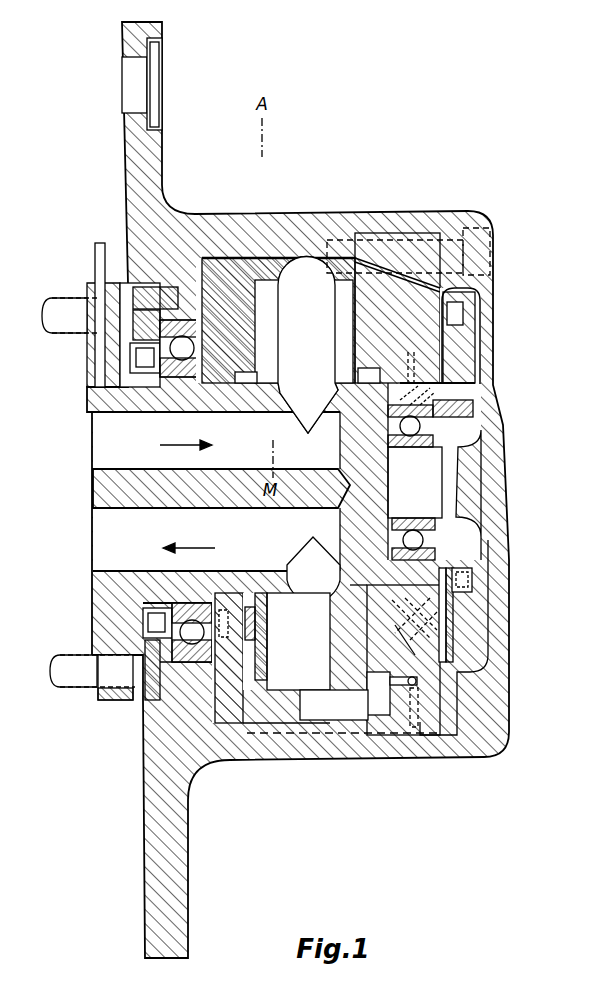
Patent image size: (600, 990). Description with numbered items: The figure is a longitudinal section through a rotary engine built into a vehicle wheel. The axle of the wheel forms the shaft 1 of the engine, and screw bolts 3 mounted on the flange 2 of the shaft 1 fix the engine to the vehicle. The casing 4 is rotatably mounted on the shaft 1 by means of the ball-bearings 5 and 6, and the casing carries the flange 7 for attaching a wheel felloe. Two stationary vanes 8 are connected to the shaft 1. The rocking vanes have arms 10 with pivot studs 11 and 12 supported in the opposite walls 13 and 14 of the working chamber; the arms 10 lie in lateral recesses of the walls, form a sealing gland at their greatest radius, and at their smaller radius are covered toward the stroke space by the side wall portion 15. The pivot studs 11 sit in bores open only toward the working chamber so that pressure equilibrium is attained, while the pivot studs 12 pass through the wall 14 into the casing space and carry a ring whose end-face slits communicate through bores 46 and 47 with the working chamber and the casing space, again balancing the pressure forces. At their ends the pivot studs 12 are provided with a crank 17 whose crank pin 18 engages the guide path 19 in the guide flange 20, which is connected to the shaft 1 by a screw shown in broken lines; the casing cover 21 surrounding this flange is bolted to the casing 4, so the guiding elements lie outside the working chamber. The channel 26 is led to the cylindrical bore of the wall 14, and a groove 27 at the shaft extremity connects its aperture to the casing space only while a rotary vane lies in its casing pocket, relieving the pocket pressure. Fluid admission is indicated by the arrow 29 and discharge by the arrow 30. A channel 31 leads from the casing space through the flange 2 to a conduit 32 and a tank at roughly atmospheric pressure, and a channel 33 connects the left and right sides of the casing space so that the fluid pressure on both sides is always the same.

The shaft 1 is at (125, 590).
The flange 2 is at (118, 695).
The screw bolts 3 is at (90, 673).
The casing 4 is at (297, 238).
The ball-bearing 5 is at (190, 663).
The ball-bearing 6 is at (432, 540).
The flange 7 is at (137, 150).
The stationary vane 8 is at (335, 293).
The arms 10 is at (370, 625).
The pivot stud 11 is at (240, 617).
The pivot stud 12 is at (370, 618).
The wall 13 is at (240, 640).
The wall 14 is at (400, 647).
The side wall portion 15 is at (268, 675).
The crank 17 is at (440, 607).
The crank pin 18 is at (462, 585).
The guide path 19 is at (460, 313).
The guide flange 20 is at (480, 345).
The casing cover 21 is at (450, 218).
The channel 26 is at (410, 372).
The groove 27 is at (445, 383).
The arrow 29 is at (186, 439).
The arrow 30 is at (189, 542).
The channel 31 is at (100, 350).
The conduit 32 is at (97, 262).
The channel 33 is at (243, 258).
The bore 46 is at (412, 600).
The bore 47 is at (414, 649).